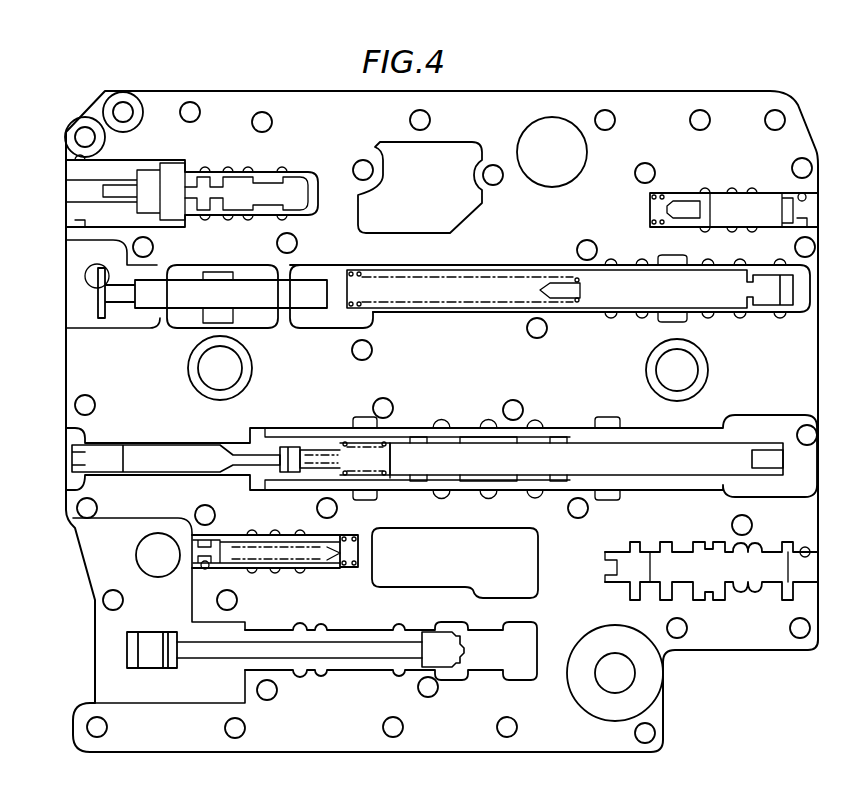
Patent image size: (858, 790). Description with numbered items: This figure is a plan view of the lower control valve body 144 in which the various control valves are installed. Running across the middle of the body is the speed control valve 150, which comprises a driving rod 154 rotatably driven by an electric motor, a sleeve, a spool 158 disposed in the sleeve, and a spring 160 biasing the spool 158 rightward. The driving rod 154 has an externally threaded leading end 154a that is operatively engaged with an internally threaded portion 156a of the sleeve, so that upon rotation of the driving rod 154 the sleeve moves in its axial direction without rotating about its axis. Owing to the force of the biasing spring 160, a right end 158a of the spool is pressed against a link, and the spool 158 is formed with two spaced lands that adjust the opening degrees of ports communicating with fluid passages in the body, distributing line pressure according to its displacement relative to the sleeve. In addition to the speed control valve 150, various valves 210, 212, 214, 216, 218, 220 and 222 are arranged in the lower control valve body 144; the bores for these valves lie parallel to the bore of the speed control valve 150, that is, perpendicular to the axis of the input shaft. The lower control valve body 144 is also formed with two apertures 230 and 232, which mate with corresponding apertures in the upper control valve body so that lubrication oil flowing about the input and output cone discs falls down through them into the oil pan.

The lower control valve body 144 is at (593, 88).
The speed control valve 150 is at (417, 425).
The driving rod 154 is at (163, 452).
The externally threaded leading end 154a is at (293, 455).
The internally threaded portion 156a is at (313, 477).
The spool 158 is at (402, 470).
The right end 158a is at (742, 445).
The spring 160 is at (343, 430).
The valve 210 is at (262, 166).
The valve 212 is at (704, 186).
The valve 214 is at (278, 326).
The valve 216 is at (627, 319).
The valve 218 is at (323, 573).
The valve 220 is at (651, 547).
The valve 222 is at (379, 672).
The aperture 230 is at (452, 157).
The aperture 232 is at (530, 548).